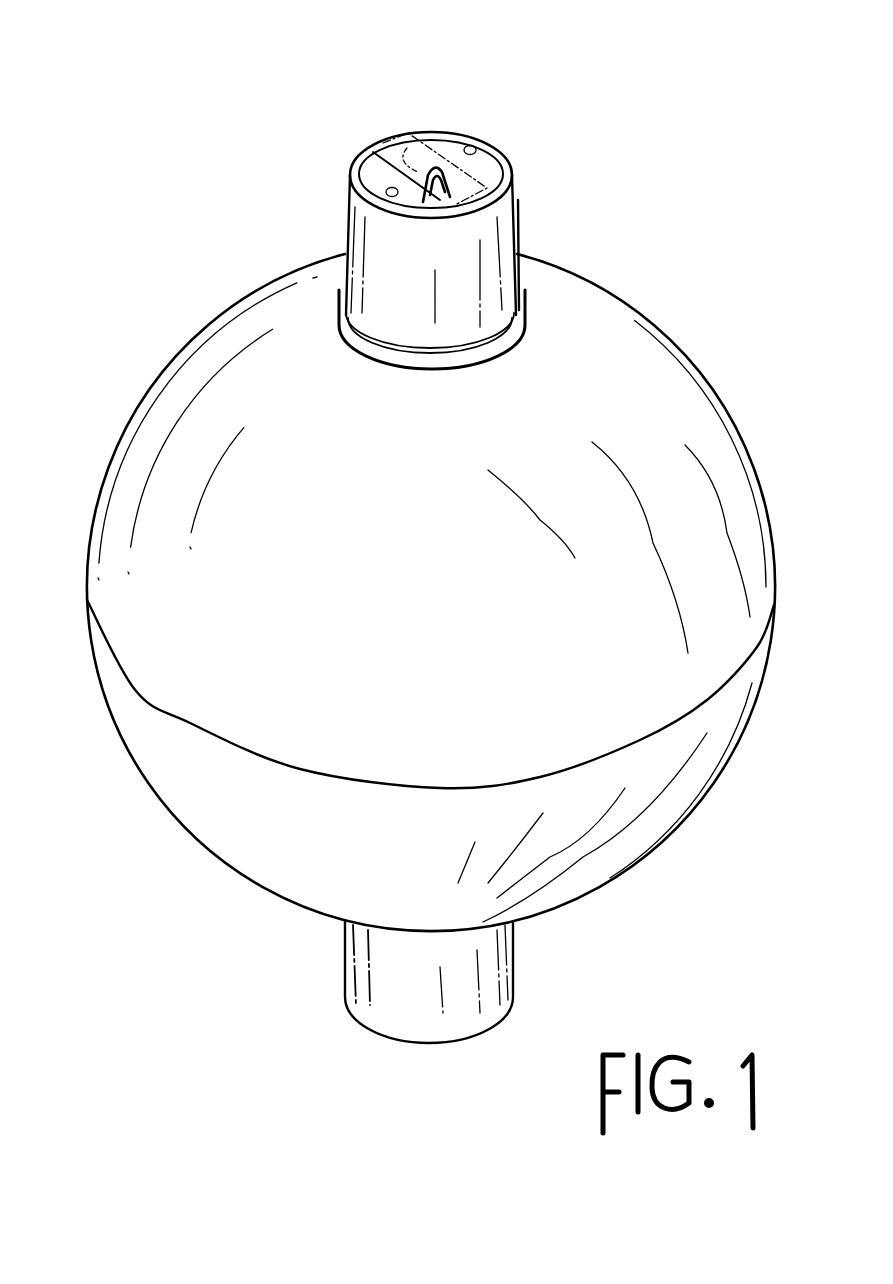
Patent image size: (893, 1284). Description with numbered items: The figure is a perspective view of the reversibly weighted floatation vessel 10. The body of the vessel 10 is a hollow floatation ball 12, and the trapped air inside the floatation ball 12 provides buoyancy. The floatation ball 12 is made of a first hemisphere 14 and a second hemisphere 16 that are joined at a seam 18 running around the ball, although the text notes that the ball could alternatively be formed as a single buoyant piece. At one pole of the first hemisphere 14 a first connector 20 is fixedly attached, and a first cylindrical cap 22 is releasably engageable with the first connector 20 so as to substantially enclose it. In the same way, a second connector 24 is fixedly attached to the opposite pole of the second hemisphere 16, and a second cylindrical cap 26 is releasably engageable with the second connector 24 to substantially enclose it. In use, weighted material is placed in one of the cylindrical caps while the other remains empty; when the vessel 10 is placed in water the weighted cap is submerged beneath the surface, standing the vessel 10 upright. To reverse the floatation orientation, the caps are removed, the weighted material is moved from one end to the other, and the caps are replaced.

The reversibly weighted floatation vessel 10 is at (116, 71).
The floatation ball 12 is at (73, 598).
The first hemisphere 14 is at (175, 452).
The second hemisphere 16 is at (179, 800).
The seam 18 is at (137, 688).
The first connector 20 is at (437, 172).
The first cylindrical cap 22 is at (490, 240).
The second connector 24 is at (401, 1045).
The second cylindrical cap 26 is at (382, 960).